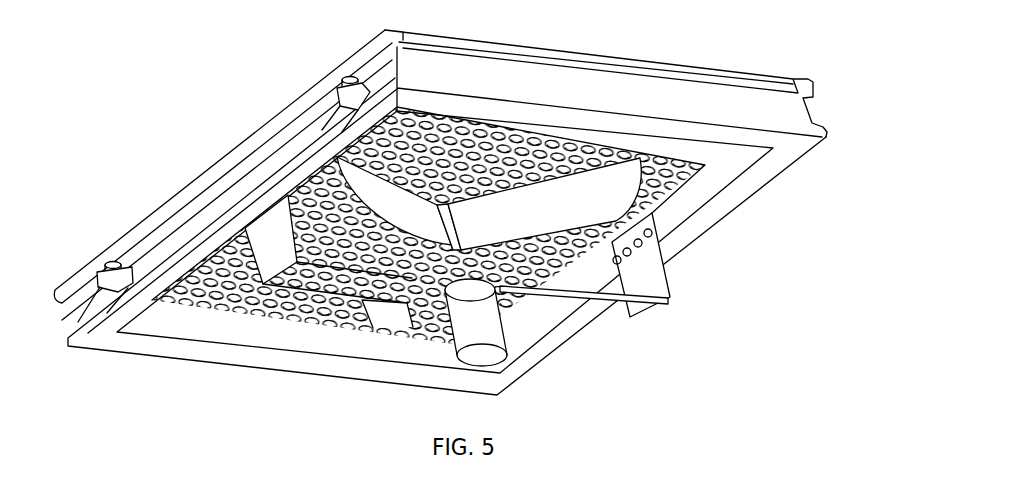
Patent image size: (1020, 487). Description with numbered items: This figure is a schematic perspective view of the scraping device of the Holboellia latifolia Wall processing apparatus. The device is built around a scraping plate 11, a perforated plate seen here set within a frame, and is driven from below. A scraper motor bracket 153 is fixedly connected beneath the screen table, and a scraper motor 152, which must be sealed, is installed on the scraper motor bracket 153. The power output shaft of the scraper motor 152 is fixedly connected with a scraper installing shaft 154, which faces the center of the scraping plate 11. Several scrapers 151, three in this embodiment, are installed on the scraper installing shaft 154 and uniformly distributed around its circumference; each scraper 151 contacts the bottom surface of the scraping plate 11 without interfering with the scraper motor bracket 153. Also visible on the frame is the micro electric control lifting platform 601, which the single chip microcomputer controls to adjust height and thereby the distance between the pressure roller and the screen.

The micro electric control lifting platform 601 is at (146, 141).
The scraper installing shaft 154 is at (76, 201).
The scraping plate 11 is at (886, 217).
The scraper 151 is at (812, 281).
The scraper motor bracket 153 is at (739, 341).
The scraper motor 152 is at (650, 411).